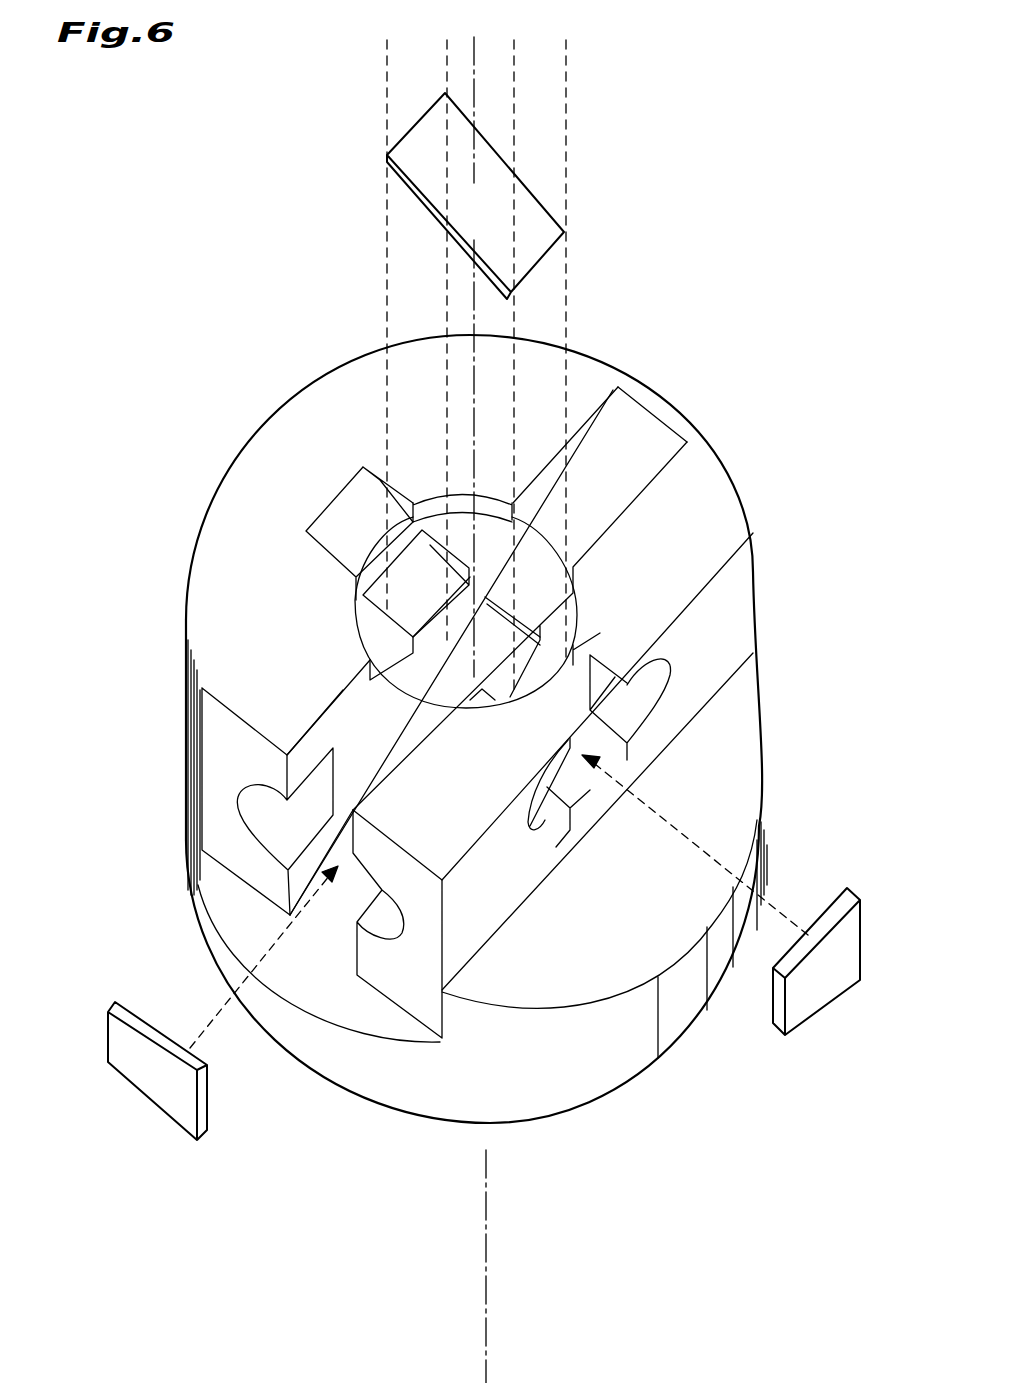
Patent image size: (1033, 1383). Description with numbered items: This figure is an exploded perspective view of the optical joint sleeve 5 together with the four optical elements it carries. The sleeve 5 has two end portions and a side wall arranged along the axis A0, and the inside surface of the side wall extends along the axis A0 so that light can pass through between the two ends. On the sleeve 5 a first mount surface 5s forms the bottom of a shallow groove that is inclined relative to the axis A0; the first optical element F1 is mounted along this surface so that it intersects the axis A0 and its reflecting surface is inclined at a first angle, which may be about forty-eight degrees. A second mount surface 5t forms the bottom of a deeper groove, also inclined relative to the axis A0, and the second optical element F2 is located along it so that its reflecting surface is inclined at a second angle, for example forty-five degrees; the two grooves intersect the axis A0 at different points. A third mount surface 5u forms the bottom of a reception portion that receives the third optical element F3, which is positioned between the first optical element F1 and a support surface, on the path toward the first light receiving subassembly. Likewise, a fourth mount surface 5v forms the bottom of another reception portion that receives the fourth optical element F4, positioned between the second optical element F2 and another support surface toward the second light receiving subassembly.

The optical joint sleeve 5 is at (702, 230).
The first mount surface 5s is at (400, 603).
The second mount surface 5t is at (650, 445).
The third mount surface 5u is at (598, 670).
The fourth mount surface 5v is at (323, 775).
The first optical element F1 is at (432, 160).
The second optical element F2 is at (453, 692).
The third optical element F3 is at (815, 985).
The fourth optical element F4 is at (160, 1077).
The axis A0 is at (474, 88).